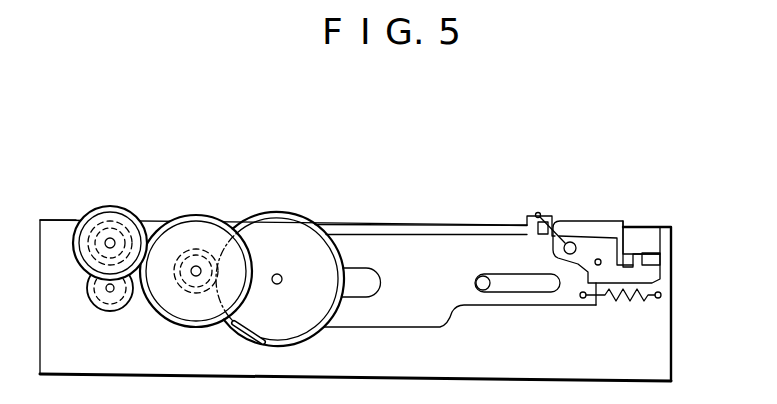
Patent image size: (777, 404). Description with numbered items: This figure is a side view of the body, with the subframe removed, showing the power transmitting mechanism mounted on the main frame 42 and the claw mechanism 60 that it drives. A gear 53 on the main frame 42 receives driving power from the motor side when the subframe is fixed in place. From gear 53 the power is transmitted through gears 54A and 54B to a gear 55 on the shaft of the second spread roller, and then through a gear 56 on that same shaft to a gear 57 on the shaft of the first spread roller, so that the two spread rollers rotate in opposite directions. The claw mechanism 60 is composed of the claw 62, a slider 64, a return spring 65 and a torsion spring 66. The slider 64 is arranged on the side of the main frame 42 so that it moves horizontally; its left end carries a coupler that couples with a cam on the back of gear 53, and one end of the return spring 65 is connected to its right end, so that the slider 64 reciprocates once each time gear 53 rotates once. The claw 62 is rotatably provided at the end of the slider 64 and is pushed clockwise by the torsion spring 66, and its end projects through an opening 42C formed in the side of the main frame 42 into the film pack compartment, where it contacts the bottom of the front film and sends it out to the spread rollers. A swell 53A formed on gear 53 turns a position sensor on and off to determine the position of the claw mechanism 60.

The main frame 42 is at (674, 326).
The opening 42C is at (661, 260).
The gear 53 is at (293, 213).
The swell 53A is at (247, 324).
The gear 54A is at (194, 252).
The gear 54B is at (215, 215).
The gear 55 is at (95, 208).
The gear 56 is at (110, 238).
The gear 57 is at (88, 294).
The claw mechanism 60 is at (451, 213).
The claw 62 is at (640, 256).
The slider 64 is at (447, 330).
The return spring 65 is at (617, 298).
The torsion spring 66 is at (590, 258).